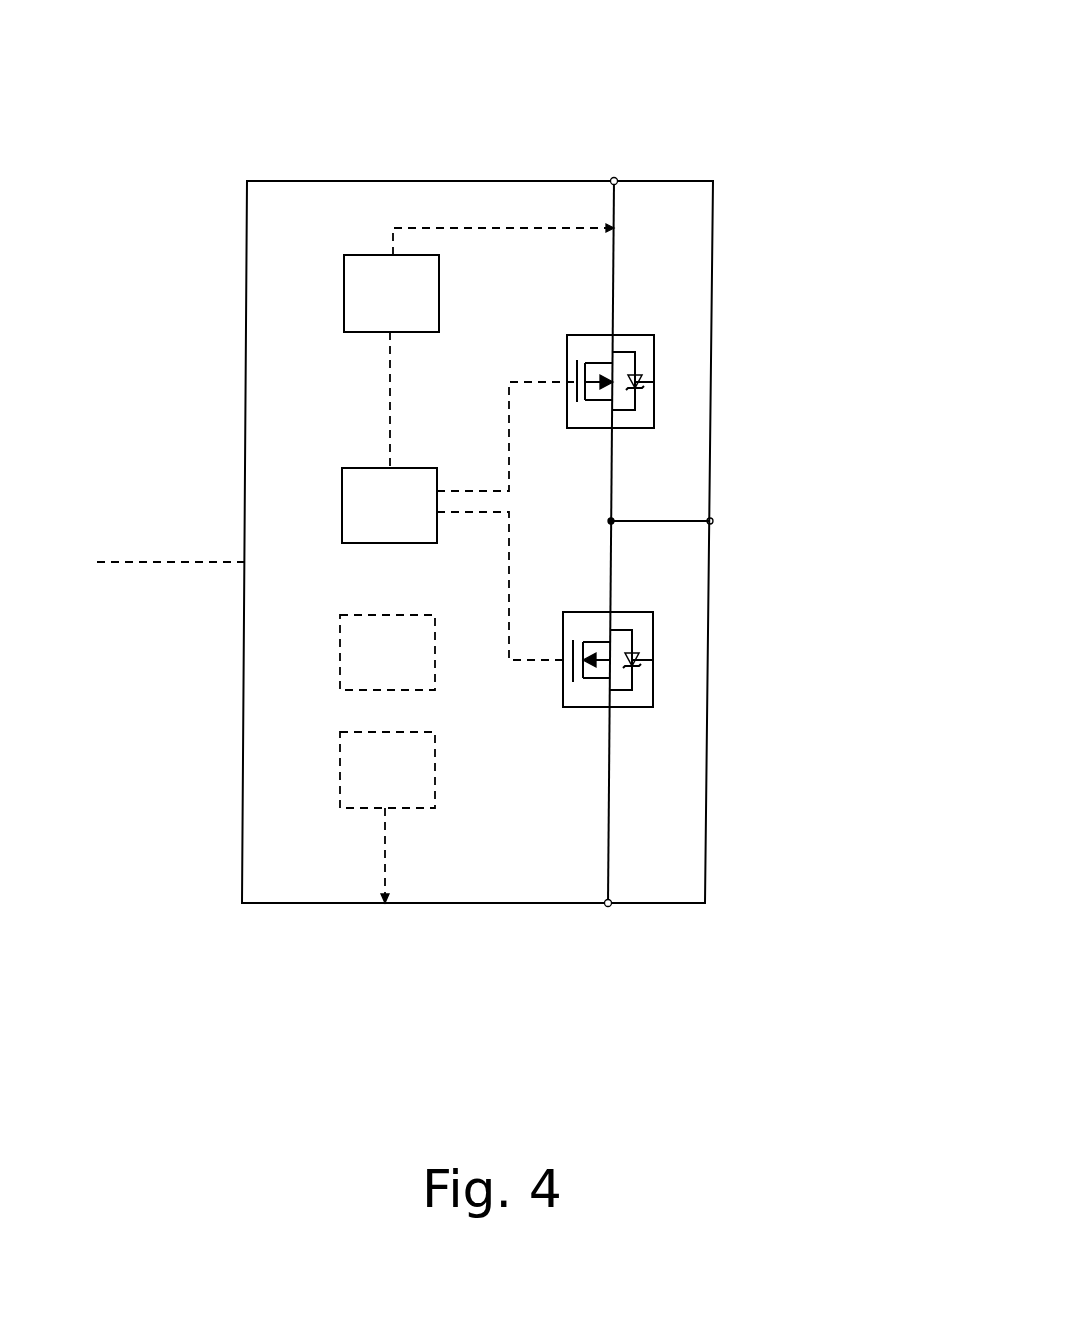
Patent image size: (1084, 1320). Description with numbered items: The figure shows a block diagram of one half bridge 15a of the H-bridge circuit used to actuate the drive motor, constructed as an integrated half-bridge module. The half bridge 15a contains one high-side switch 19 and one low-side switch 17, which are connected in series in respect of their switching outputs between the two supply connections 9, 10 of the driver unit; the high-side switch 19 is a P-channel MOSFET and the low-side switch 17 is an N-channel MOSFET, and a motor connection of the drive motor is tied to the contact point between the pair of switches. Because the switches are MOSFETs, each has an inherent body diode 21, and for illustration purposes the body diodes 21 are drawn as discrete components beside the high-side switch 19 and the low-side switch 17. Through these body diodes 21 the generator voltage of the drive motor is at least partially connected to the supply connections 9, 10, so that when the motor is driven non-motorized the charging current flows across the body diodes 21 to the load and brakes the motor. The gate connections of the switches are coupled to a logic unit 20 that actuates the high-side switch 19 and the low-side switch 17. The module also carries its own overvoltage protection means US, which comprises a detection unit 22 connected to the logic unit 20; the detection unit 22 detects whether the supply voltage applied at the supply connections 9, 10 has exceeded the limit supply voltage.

The half bridge 15a is at (687, 134).
The supply connection 9 is at (614, 179).
The supply connection 10 is at (607, 906).
The detection unit 22 is at (363, 280).
The logic unit 20 is at (365, 507).
The overvoltage protection means US is at (309, 462).
The high-side switch 19 is at (641, 335).
The low-side switch 17 is at (653, 694).
The body diode 21 is at (655, 383).